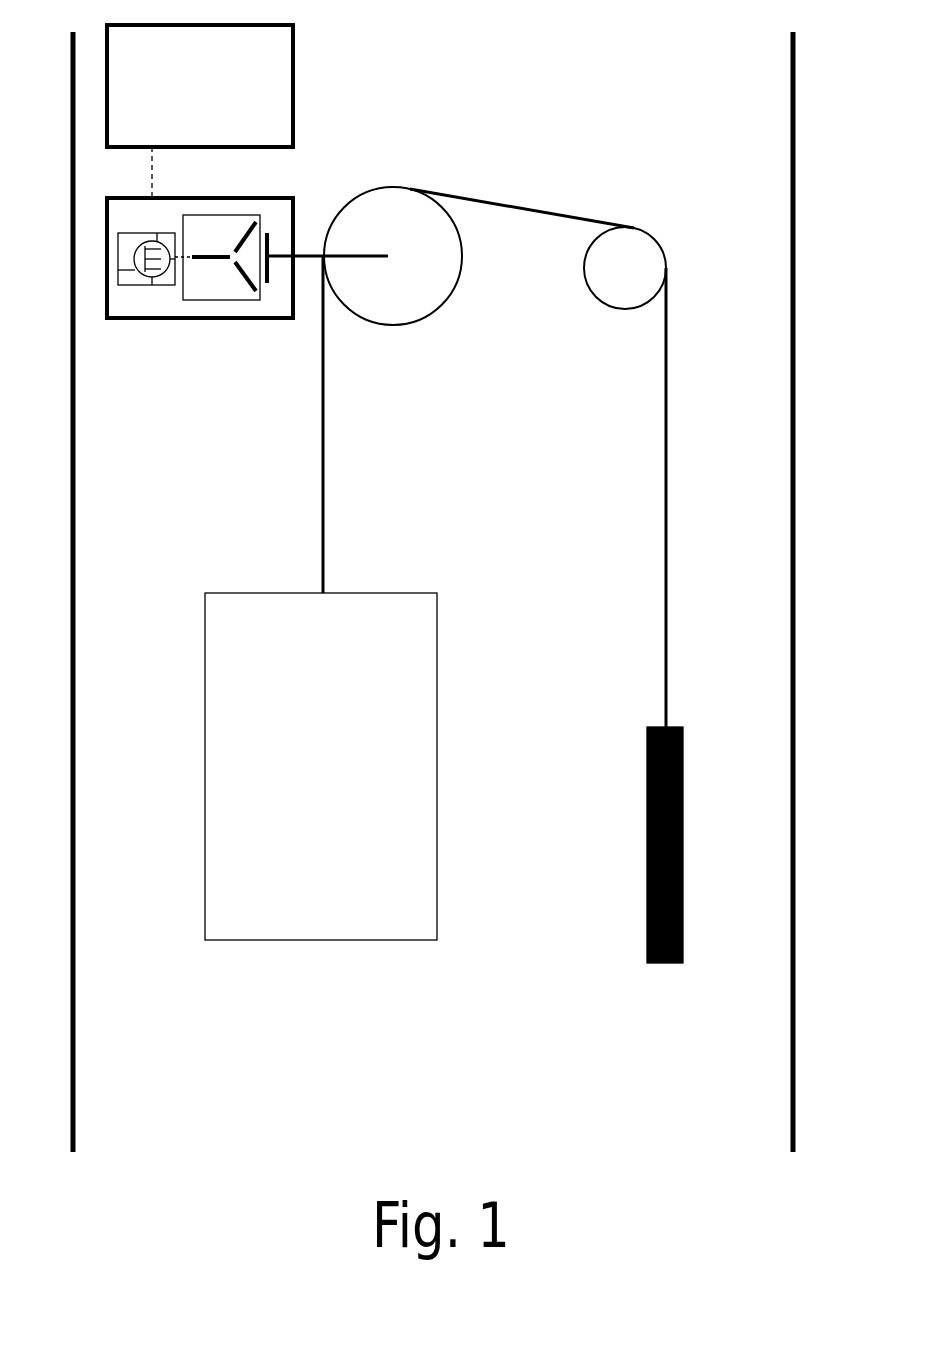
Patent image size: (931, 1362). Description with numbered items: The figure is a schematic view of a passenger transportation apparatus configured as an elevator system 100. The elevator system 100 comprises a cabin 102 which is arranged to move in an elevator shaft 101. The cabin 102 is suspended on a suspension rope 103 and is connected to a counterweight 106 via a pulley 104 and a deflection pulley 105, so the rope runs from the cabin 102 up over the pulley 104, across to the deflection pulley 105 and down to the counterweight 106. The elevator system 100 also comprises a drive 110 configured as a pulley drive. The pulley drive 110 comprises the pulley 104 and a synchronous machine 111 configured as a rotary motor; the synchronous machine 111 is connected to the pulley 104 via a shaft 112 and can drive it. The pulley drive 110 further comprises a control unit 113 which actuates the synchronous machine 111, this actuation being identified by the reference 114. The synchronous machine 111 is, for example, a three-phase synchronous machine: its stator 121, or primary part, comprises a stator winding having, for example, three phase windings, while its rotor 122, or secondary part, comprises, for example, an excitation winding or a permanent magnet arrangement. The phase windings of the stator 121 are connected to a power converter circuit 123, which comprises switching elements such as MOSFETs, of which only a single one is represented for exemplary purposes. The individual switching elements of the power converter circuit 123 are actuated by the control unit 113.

The elevator system 100 is at (179, 1090).
The elevator shaft 101 is at (74, 965).
The cabin 102 is at (338, 750).
The suspension rope 103 is at (318, 410).
The pulley 104 is at (405, 207).
The deflection pulley 105 is at (620, 258).
The counterweight 106 is at (682, 788).
The drive 110 is at (452, 106).
The synchronous machine 111 is at (150, 320).
The shaft 112 is at (347, 250).
The control unit 113 is at (283, 82).
The actuation connection 114 is at (158, 162).
The stator 121 is at (224, 293).
The rotor 122 is at (269, 268).
The power converter circuit 123 is at (142, 229).